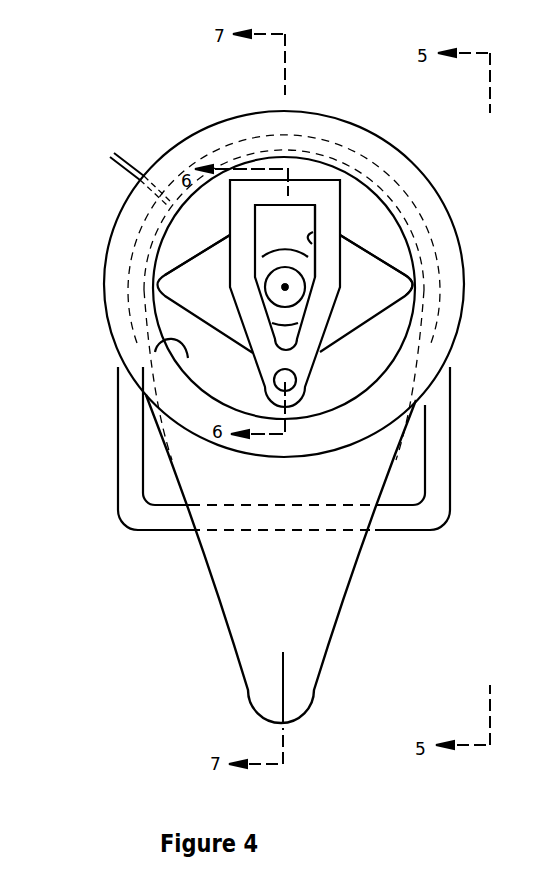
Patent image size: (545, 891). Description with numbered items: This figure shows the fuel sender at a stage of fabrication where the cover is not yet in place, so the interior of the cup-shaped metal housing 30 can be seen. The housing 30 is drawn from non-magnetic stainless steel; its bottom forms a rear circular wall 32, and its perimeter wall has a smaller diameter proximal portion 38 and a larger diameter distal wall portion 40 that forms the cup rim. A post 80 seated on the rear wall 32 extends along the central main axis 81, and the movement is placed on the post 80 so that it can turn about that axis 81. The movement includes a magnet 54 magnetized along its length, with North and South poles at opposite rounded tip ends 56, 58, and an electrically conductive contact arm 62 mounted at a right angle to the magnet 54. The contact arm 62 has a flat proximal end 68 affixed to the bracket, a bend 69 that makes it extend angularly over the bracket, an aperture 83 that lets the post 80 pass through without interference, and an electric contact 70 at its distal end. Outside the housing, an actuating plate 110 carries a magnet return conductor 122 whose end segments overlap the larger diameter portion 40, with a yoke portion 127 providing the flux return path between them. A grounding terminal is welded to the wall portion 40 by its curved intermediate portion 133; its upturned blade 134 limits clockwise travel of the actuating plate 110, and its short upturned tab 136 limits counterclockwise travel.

The housing 30 is at (427, 178).
The rear circular wall 32 is at (118, 160).
The smaller diameter proximal portion 38 is at (177, 360).
The larger diameter distal wall portion 40 is at (103, 282).
The magnet 54 is at (185, 268).
The tip end 56 is at (410, 300).
The tip end 58 is at (160, 270).
The contact arm 62 is at (325, 235).
The proximal end 68 is at (310, 192).
The bend 69 is at (327, 207).
The electric contact 70 is at (285, 380).
The post 80 is at (262, 257).
The central main axis 81 is at (285, 287).
The aperture 83 is at (285, 287).
The actuating plate 110 is at (208, 575).
The magnet return conductor 122 is at (128, 520).
The yoke portion 127 is at (428, 512).
The intermediate portion 133 is at (358, 118).
The upturned blade 134 is at (120, 173).
The upturned tab 136 is at (445, 232).